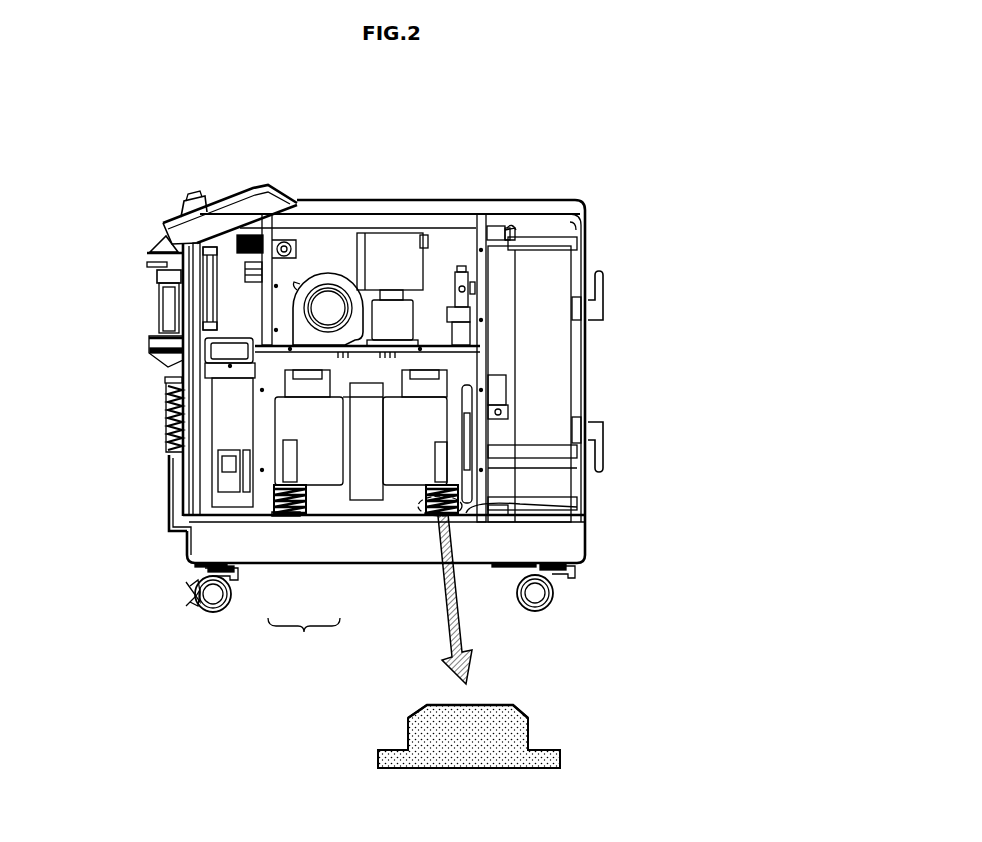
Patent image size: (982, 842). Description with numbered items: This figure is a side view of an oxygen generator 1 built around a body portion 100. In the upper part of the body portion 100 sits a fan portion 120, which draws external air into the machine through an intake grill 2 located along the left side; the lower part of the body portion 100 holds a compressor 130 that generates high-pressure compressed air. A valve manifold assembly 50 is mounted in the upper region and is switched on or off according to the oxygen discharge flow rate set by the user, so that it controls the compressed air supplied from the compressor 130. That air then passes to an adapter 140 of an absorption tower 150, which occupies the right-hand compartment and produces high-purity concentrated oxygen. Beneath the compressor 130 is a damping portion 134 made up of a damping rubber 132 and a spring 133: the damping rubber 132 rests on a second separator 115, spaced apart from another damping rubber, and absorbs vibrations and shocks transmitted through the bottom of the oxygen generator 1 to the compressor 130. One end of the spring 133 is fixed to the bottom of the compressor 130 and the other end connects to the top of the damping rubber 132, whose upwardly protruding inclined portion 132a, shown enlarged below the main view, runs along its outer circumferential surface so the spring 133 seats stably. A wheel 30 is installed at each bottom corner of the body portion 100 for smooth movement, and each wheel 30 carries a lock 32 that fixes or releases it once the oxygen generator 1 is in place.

The oxygen generator 1 is at (636, 130).
The intake grill 2 is at (168, 412).
The wheel 30 is at (208, 610).
The lock 32 is at (190, 592).
The valve manifold assembly 50 is at (450, 276).
The body portion 100 is at (383, 200).
The second separator 115 is at (470, 515).
The fan portion 120 is at (329, 272).
The compressor 130 is at (410, 488).
The damping rubber 132 is at (315, 512).
The inclined portion 132a is at (418, 712).
The spring 133 is at (290, 516).
The damping portion 134 is at (304, 636).
The adapter 140 is at (498, 226).
The absorption tower 150 is at (576, 367).